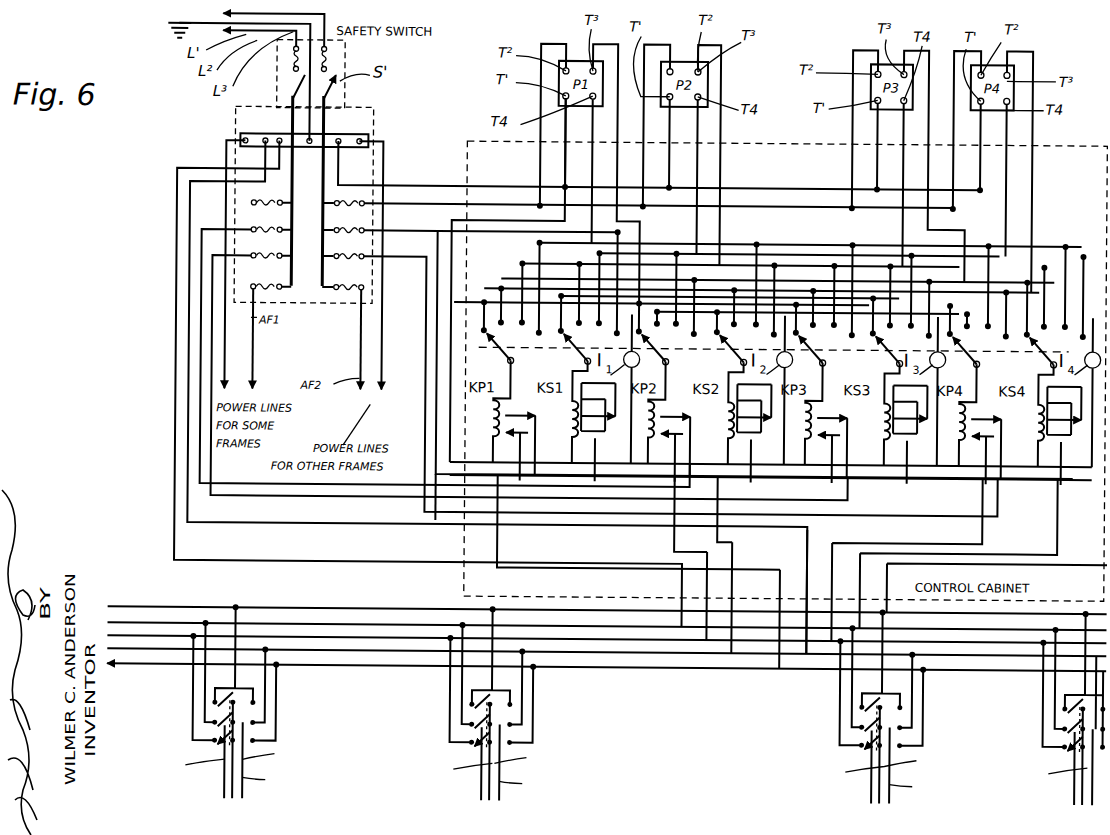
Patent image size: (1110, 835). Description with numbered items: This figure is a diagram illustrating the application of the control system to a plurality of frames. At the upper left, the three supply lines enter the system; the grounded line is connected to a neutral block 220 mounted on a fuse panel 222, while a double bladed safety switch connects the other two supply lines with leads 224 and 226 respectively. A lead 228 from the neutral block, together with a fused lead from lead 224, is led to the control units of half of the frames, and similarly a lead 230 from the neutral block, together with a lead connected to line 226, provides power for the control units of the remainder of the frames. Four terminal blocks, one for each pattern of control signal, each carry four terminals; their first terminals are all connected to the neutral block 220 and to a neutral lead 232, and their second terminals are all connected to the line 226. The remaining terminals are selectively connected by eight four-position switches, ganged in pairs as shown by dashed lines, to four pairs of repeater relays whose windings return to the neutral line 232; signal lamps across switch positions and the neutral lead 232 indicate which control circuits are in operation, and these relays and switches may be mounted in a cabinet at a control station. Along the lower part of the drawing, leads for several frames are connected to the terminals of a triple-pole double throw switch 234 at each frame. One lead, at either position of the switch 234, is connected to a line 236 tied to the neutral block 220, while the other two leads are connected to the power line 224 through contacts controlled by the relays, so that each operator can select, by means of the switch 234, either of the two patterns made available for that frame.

The neutral block 220 is at (242, 135).
The fuse panel 222 is at (378, 112).
The lead 224 is at (226, 165).
The lead 226 is at (383, 166).
The lead 228 is at (226, 362).
The lead 230 is at (383, 361).
The neutral lead 232 is at (768, 475).
The triple-pole double throw switch 234 is at (520, 722).
The line 236 is at (343, 595).